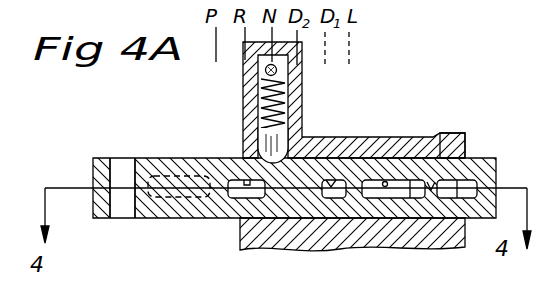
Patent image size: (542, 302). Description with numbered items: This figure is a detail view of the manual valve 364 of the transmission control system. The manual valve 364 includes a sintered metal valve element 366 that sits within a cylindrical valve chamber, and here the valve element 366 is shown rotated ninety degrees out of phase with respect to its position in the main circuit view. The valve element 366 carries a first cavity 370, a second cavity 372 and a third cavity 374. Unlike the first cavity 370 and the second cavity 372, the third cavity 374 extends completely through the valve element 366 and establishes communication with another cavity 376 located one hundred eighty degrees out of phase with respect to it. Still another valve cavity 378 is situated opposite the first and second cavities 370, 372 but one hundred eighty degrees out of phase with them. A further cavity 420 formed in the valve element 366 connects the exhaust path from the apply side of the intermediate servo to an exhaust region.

The manual valve 364 is at (227, 220).
The sintered metal valve element 366 is at (311, 203).
The first cavity 370 is at (385, 182).
The second cavity 372 is at (459, 182).
The third cavity 374 is at (232, 157).
The cavity 376 is at (359, 126).
The valve cavity 378 is at (442, 128).
The cavity 420 is at (166, 201).